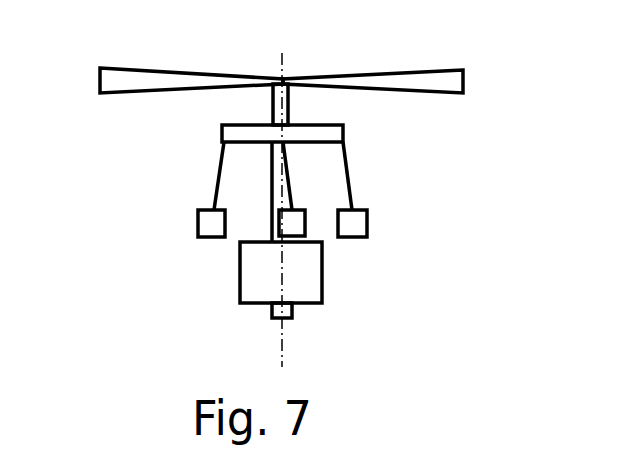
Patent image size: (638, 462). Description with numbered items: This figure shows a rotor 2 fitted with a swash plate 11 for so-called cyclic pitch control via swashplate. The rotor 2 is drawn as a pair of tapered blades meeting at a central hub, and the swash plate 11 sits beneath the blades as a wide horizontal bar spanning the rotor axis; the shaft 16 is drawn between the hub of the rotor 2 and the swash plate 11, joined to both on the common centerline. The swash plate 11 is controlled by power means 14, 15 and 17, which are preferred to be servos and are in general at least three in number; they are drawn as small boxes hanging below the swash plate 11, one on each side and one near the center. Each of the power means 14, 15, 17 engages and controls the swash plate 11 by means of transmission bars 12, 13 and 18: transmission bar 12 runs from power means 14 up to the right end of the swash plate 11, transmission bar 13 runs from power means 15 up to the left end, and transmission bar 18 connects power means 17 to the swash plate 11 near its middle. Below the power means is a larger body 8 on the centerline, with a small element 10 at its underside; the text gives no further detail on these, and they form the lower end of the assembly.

The rotor 2 is at (122, 70).
The rotor shaft 16 is at (273, 108).
The swash plate 11 is at (290, 130).
The transmission bar 13 is at (220, 160).
The transmission bar 12 is at (350, 187).
The power means 15 is at (198, 223).
The power means 14 is at (367, 237).
The transmission bar 18 is at (292, 165).
The power means 17 is at (292, 220).
The housing 8 is at (252, 267).
The connector 10 is at (270, 313).